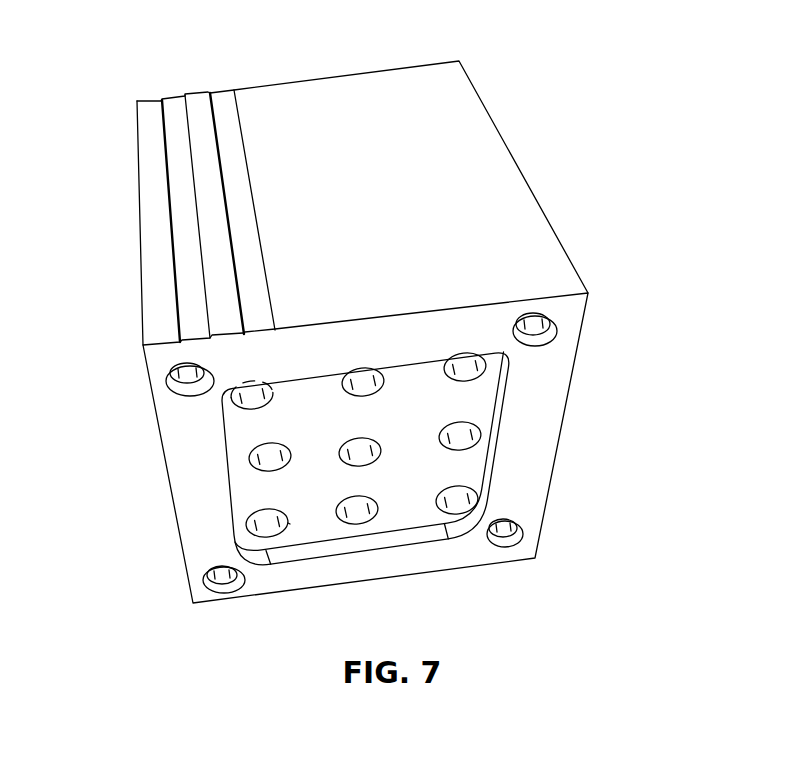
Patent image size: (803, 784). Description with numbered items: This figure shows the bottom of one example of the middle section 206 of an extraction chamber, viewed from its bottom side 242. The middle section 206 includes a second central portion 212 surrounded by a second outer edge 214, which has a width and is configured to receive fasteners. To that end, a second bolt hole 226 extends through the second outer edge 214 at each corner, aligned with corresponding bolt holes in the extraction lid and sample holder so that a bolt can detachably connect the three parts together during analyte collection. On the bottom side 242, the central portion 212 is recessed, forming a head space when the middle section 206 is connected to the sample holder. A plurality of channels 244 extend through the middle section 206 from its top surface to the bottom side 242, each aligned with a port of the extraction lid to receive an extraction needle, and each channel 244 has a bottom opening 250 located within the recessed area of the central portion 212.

The middle section 206 is at (547, 64).
The second central portion 212 is at (432, 452).
The second outer edge 214 is at (544, 418).
The second bolt hole 226 is at (166, 382).
The bottom side 242 is at (176, 478).
The channel 244 is at (298, 535).
The bottom opening 250 is at (268, 508).